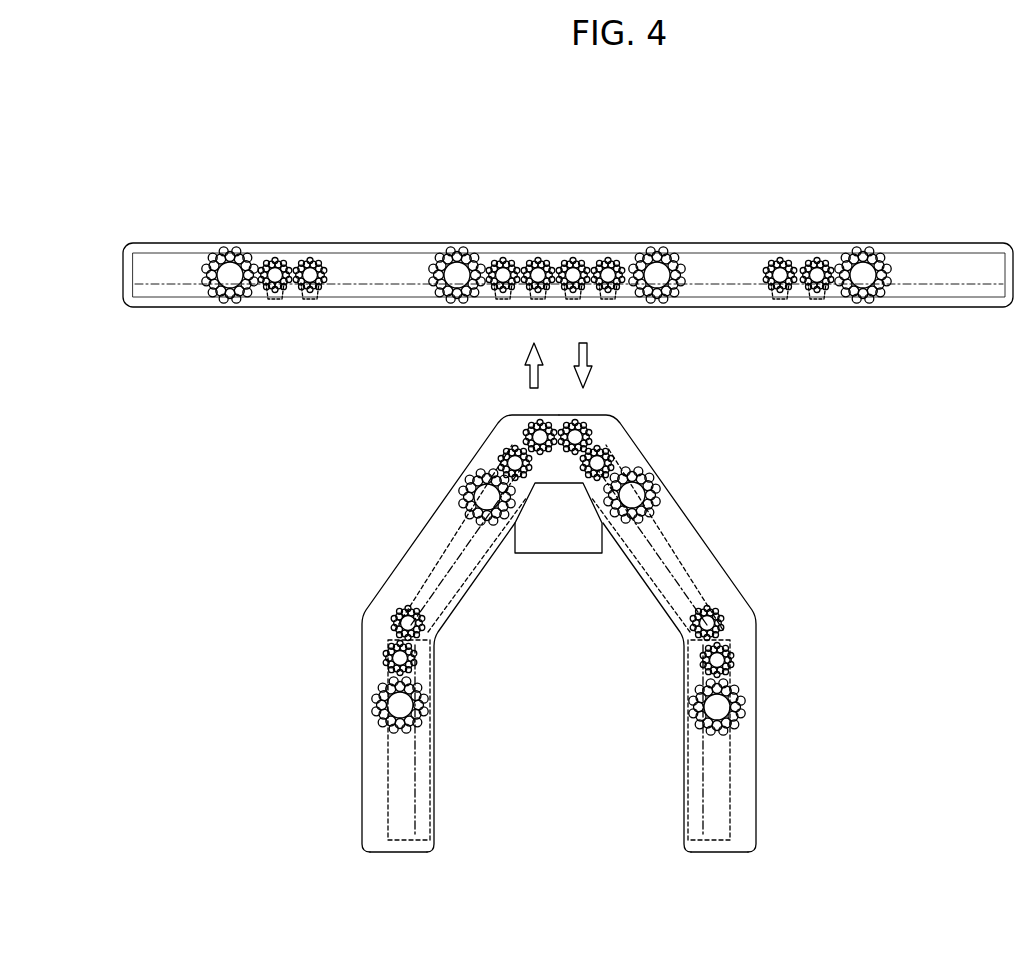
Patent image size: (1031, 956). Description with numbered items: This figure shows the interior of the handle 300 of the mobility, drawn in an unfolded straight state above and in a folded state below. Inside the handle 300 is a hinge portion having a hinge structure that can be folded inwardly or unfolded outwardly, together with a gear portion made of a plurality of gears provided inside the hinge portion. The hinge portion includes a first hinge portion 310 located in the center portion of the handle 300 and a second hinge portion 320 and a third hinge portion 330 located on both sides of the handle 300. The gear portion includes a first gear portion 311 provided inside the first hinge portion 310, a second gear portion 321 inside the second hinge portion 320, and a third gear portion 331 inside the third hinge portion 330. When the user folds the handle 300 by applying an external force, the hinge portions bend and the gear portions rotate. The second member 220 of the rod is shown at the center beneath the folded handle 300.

The handle 300 is at (229, 173).
The first hinge portion 310 is at (540, 243).
The first gear portion 311 is at (456, 246).
The second hinge portion 320 is at (272, 243).
The second gear portion 321 is at (228, 305).
The third hinge portion 330 is at (822, 243).
The third gear portion 331 is at (862, 305).
The second member 220 is at (555, 535).